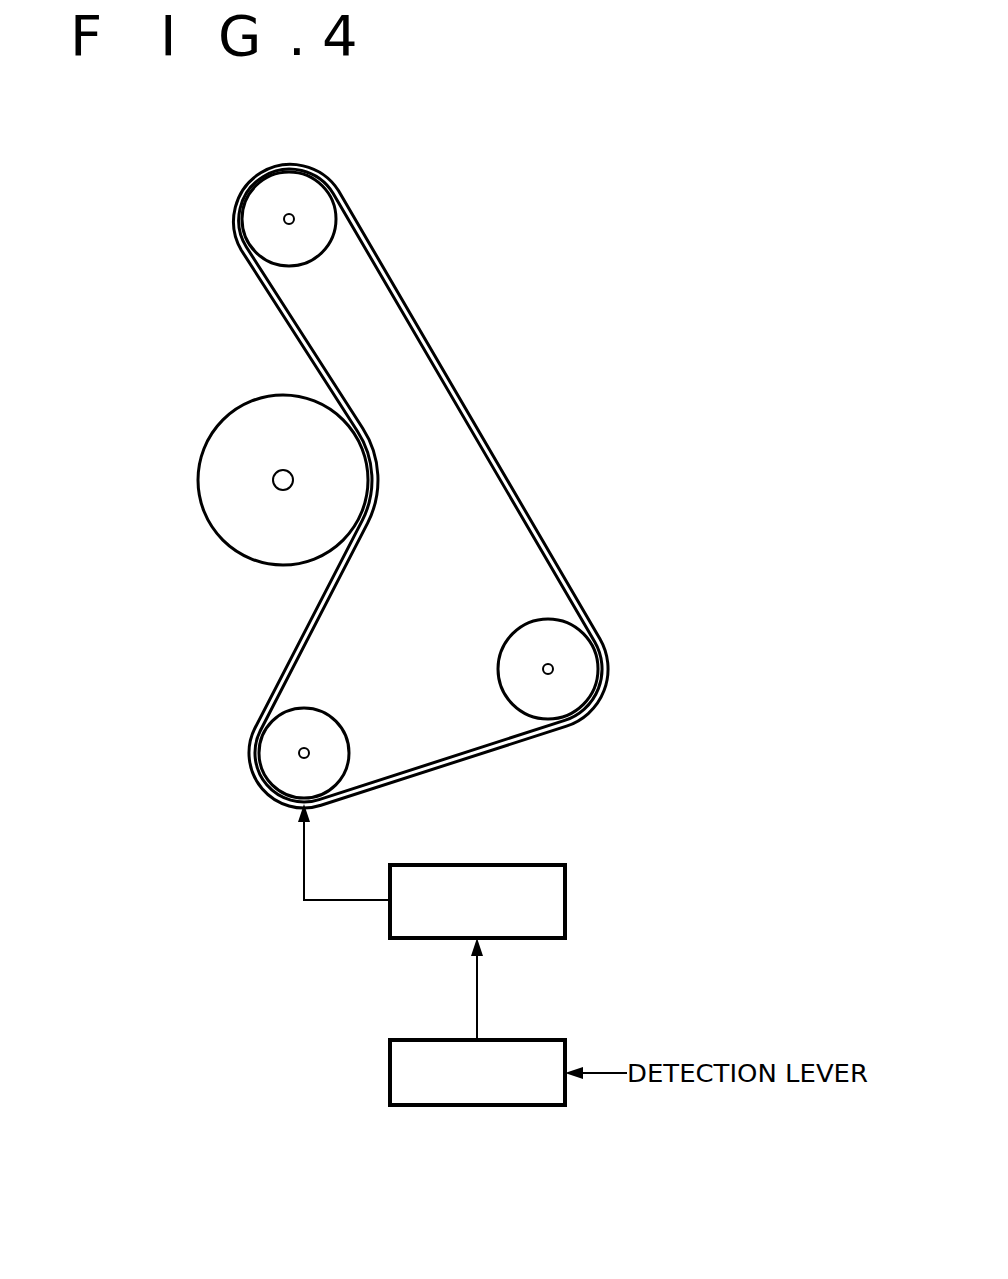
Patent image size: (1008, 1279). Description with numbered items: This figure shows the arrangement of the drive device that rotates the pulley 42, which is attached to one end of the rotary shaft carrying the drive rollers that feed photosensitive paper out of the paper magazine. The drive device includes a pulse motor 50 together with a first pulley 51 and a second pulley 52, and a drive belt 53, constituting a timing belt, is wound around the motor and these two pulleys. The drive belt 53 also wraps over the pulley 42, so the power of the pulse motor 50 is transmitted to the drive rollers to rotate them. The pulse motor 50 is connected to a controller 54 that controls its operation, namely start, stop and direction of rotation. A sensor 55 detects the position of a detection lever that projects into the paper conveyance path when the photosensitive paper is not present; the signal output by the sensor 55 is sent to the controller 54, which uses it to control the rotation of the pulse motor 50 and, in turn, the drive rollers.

The pulley 42 is at (238, 427).
The pulse motor 50 is at (282, 777).
The first pulley 51 is at (322, 211).
The second pulley 52 is at (590, 657).
The drive belt 53 is at (420, 328).
The controller 54 is at (515, 864).
The sensor 55 is at (528, 1040).